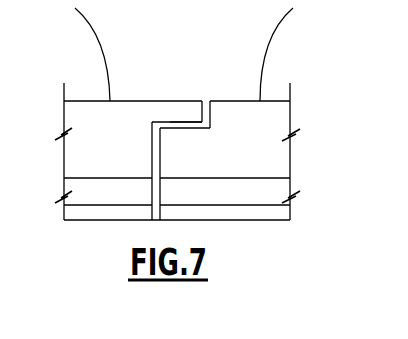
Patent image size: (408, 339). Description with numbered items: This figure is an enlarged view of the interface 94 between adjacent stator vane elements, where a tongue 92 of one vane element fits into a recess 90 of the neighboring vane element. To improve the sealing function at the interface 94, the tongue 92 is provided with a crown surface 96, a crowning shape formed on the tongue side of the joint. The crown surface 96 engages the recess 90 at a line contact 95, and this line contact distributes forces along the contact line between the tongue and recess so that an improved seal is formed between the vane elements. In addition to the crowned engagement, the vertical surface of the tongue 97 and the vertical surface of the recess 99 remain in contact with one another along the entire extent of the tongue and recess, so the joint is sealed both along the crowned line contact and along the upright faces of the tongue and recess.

The recess 90 is at (185, 131).
The tongue 92 is at (186, 113).
The interface 94 is at (190, 75).
The line contact 95 is at (192, 130).
The crown surface 96 is at (178, 124).
The vertical surface of tongue 97 is at (200, 112).
The vertical surface of recess 99 is at (211, 120).